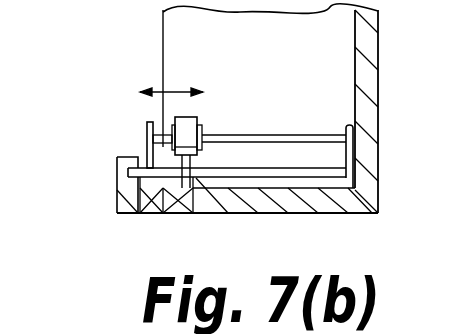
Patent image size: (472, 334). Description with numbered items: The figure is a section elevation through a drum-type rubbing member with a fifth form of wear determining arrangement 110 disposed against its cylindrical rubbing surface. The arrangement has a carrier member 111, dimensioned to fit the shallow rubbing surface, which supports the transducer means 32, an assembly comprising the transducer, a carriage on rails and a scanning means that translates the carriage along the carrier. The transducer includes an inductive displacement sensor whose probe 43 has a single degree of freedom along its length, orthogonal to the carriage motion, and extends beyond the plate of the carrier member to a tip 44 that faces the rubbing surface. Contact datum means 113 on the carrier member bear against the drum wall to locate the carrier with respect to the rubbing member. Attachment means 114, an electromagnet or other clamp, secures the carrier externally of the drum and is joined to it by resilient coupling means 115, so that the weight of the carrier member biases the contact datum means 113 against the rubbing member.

The wear determining arrangement 110 is at (140, 150).
The carrier member 111 is at (274, 175).
The contact datum means 113 is at (352, 172).
The attachment means 114 is at (125, 212).
The resilient coupling means 115 is at (117, 192).
The transducer means 32 is at (205, 153).
The probe 43 is at (204, 207).
The tip 44 is at (176, 208).